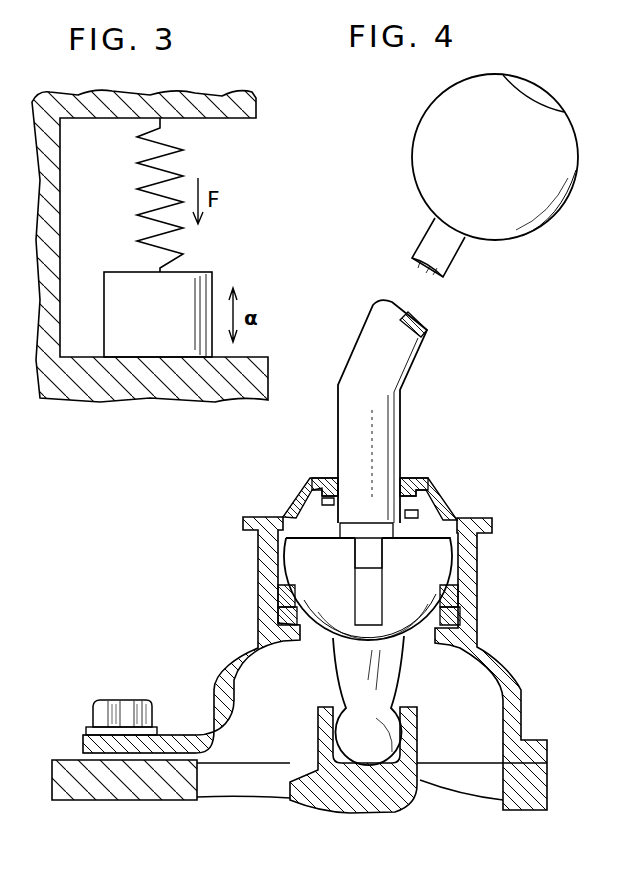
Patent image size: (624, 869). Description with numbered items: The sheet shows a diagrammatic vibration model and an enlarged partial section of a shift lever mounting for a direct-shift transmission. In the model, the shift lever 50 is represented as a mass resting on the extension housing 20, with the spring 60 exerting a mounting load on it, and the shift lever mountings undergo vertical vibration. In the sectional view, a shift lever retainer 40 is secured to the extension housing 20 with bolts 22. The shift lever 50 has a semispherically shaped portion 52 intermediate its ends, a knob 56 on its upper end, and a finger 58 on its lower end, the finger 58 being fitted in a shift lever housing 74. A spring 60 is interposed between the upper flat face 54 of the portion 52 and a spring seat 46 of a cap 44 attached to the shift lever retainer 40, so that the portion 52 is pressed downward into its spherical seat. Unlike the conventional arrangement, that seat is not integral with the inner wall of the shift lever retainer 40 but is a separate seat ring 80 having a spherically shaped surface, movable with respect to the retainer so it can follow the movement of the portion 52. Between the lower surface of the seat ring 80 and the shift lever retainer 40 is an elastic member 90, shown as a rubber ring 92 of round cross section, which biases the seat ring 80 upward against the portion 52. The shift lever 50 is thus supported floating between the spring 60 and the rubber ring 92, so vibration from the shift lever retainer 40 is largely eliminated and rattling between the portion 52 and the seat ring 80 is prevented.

In FIG. 4, the extension housing 20 is at (546, 793).
In FIG. 4, the bolts 22 is at (150, 712).
In FIG. 3, the shift lever retainer 40 is at (146, 394).
In FIG. 4, the shift lever retainer 40 is at (512, 672).
In FIG. 4, the cap 44 is at (433, 478).
In FIG. 4, the spring seat 46 is at (322, 486).
In FIG. 3, the shift lever 50 is at (125, 270).
In FIG. 4, the shift lever 50 is at (408, 383).
In FIG. 4, the semispherically shaped portion 52 is at (453, 565).
In FIG. 4, the upper flat face 54 is at (282, 512).
In FIG. 4, the knob 56 is at (524, 236).
In FIG. 4, the finger 58 is at (394, 733).
In FIG. 3, the spring 60 is at (143, 197).
In FIG. 4, the spring 60 is at (463, 520).
In FIG. 4, the shift lever housing 74 is at (396, 800).
In FIG. 4, the seat ring 80 is at (273, 612).
In FIG. 4, the elastic member 90 is at (473, 624).
In FIG. 4, the rubber ring 92 is at (304, 624).